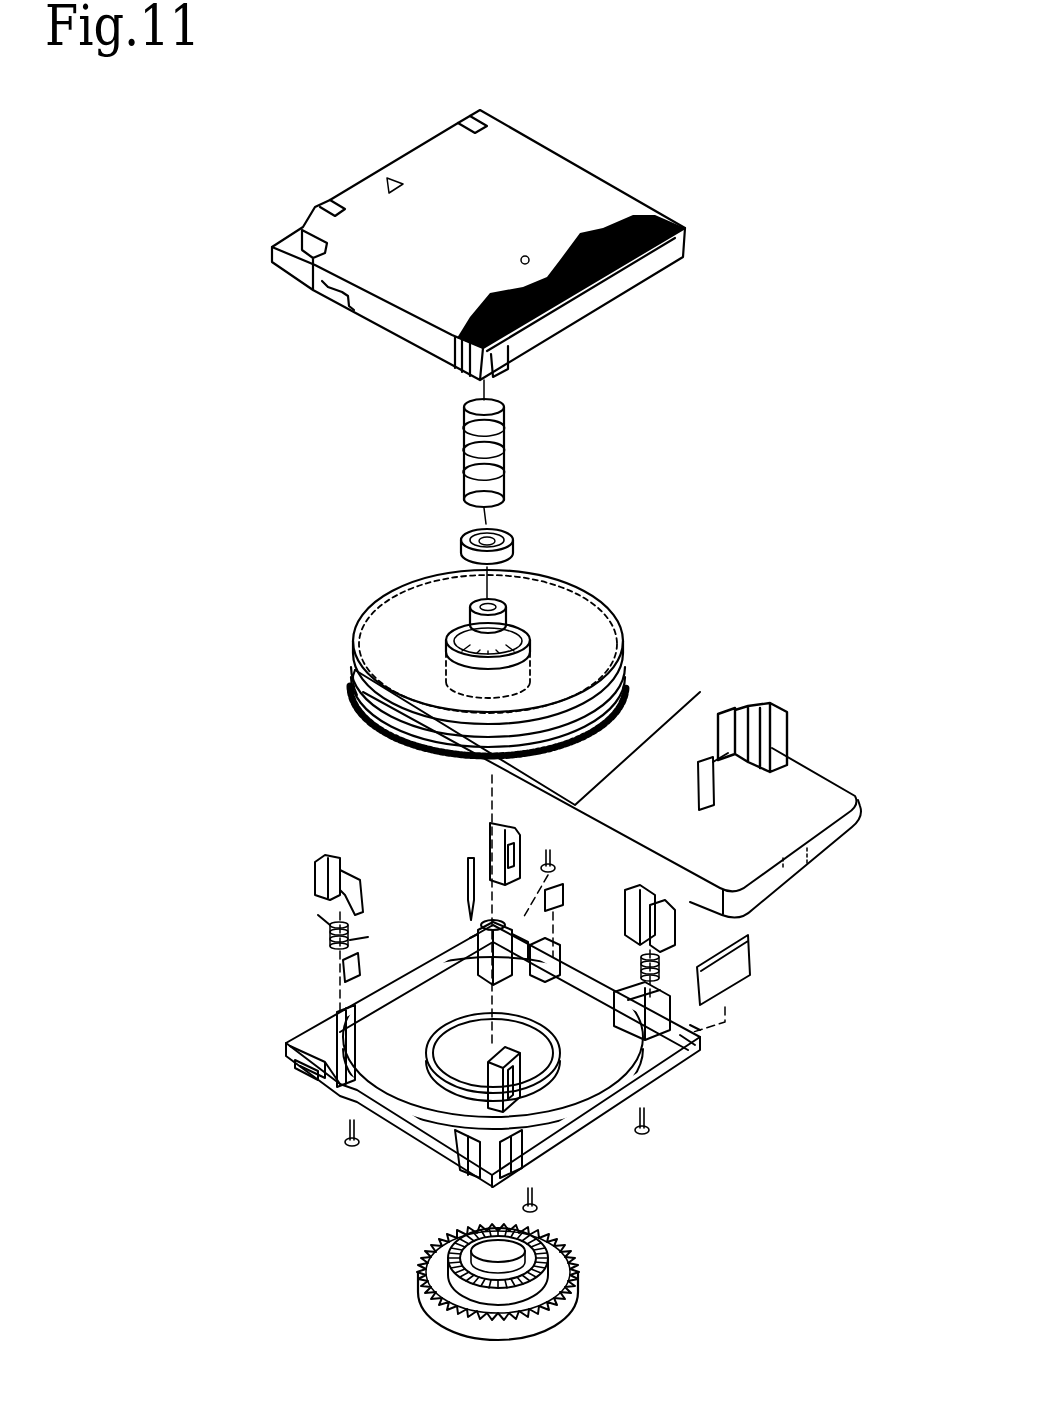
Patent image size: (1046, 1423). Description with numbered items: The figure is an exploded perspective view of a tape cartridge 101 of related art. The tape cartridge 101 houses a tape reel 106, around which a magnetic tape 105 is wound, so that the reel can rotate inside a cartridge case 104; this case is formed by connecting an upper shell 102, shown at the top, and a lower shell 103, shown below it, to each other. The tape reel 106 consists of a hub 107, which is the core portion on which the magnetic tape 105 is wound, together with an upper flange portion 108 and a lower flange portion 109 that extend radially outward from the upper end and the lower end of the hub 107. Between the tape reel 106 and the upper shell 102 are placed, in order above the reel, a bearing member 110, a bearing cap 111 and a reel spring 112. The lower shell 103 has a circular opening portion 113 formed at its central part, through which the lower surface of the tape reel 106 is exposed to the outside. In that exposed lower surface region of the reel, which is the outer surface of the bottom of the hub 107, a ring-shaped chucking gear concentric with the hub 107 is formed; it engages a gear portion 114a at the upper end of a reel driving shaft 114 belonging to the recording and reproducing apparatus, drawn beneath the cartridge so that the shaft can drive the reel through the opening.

The tape cartridge 101 is at (733, 219).
The upper shell 102 is at (268, 255).
The lower shell 103 is at (290, 1040).
The cartridge case 104 is at (190, 582).
The magnetic tape 105 is at (696, 700).
The tape reel 106 is at (693, 493).
The hub 107 is at (604, 598).
The upper flange portion 108 is at (568, 578).
The lower flange portion 109 is at (633, 680).
The bearing member 110 is at (468, 615).
The bearing cap 111 is at (467, 537).
The reel spring 112 is at (464, 436).
The circular opening portion 113 is at (557, 1073).
The reel driving shaft 114 is at (583, 1289).
The gear portion 114a is at (455, 1233).